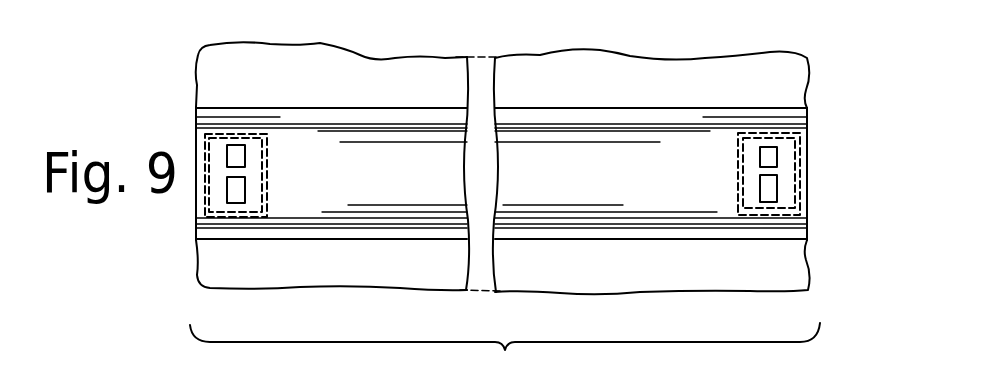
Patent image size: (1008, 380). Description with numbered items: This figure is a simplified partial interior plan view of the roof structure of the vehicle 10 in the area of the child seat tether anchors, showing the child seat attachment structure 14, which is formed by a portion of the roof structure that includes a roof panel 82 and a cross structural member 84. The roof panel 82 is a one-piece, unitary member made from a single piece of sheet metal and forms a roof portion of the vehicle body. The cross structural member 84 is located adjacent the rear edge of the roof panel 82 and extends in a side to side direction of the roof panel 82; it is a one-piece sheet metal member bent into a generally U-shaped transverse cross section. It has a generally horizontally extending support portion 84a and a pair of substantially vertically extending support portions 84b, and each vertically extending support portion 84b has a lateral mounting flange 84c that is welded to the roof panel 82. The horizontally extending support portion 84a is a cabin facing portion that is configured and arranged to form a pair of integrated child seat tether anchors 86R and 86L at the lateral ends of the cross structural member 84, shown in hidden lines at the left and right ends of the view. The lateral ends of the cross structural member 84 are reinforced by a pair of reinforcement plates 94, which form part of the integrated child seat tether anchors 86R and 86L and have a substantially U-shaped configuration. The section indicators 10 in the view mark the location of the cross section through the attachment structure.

The vehicle 10 is at (235, 100).
The child seat attachment structure 14 is at (332, 276).
The roof panel 82 is at (720, 87).
The cross structural member 84 is at (623, 222).
The horizontally extending support portion 84a is at (533, 200).
The vertically extending support portions 84b is at (373, 128).
The lateral mounting flange 84c is at (527, 118).
The integrated child seat tether anchor 86L is at (280, 141).
The integrated child seat tether anchor 86R is at (810, 142).
The reinforcement plates 94 is at (268, 168).